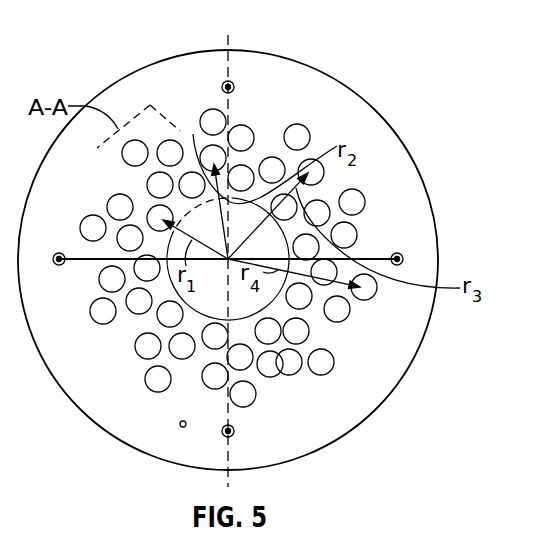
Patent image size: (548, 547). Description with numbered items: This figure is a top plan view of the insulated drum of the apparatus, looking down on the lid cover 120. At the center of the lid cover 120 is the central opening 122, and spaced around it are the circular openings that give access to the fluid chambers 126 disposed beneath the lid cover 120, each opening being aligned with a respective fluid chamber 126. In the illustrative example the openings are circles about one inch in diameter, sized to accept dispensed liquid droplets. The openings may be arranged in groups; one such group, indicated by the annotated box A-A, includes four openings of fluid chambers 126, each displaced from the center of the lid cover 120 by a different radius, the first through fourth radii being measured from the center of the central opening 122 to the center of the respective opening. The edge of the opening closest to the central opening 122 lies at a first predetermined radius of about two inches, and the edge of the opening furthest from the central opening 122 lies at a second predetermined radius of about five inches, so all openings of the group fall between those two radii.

The lid cover 120 is at (401, 181).
The central opening 122 is at (236, 318).
The fluid chambers 126 is at (273, 57).